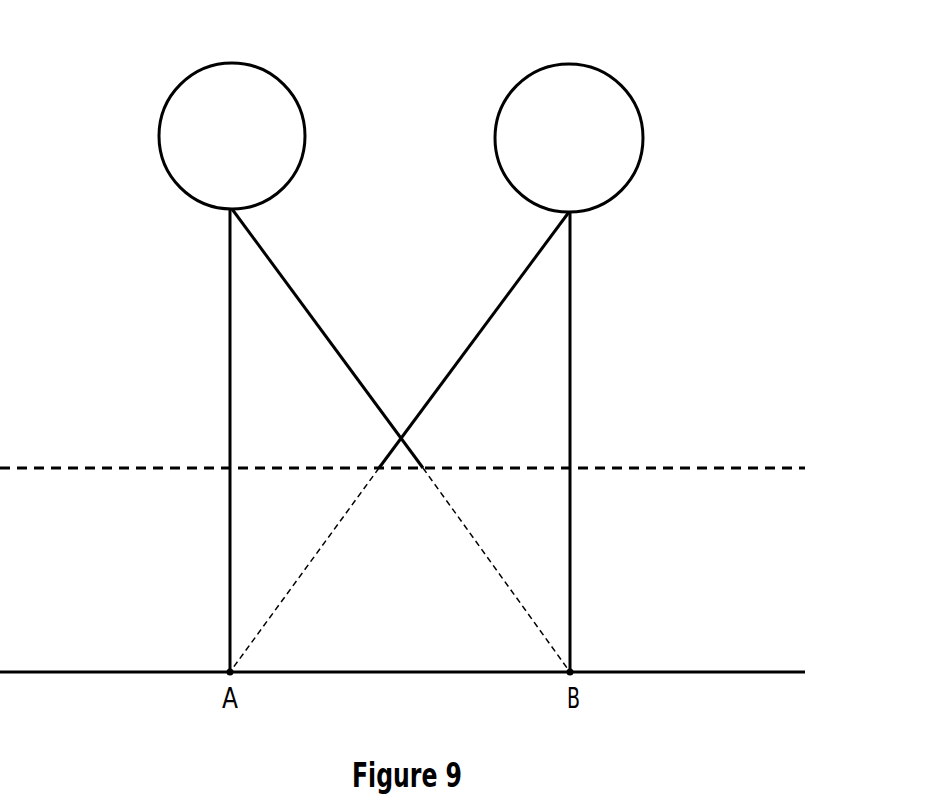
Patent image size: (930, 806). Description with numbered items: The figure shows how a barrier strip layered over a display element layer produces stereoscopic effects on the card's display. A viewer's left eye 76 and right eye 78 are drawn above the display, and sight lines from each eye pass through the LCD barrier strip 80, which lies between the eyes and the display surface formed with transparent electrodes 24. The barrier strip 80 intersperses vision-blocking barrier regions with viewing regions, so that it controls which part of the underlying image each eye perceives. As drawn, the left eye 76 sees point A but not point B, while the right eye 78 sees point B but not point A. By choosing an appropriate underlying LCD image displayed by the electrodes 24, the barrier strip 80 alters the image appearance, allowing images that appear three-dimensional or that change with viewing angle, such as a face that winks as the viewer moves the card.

The left eye 76 is at (251, 150).
The right eye 78 is at (586, 151).
The LCD barrier strip 80 is at (402, 443).
The transparent electrodes 24 is at (402, 647).